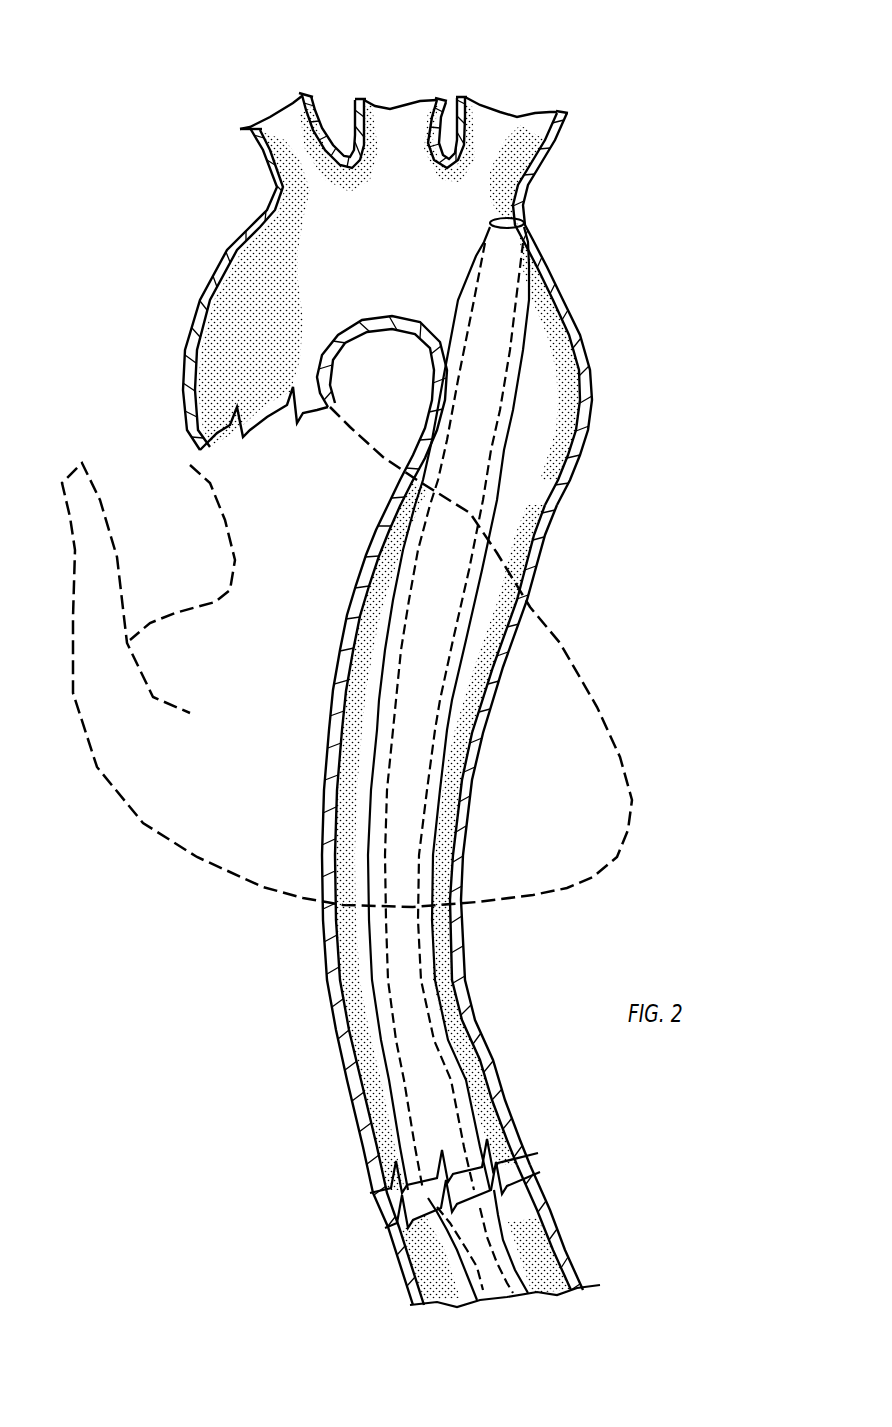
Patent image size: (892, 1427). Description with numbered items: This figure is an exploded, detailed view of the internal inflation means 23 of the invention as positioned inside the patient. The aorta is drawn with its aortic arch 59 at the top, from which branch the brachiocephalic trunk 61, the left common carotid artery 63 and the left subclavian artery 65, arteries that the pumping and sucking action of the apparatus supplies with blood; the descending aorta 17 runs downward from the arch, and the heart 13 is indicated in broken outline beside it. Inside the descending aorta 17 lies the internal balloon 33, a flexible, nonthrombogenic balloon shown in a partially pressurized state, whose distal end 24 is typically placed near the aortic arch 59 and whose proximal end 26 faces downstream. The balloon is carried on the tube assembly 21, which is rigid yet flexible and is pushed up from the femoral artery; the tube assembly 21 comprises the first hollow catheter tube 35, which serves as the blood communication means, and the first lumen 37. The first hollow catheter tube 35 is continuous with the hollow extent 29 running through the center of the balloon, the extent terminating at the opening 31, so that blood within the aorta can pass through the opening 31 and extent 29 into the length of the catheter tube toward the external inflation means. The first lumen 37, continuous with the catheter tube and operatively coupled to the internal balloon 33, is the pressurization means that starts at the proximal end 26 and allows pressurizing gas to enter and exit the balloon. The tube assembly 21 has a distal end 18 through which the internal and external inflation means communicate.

The heart 13 is at (197, 853).
The descending aorta 17 is at (477, 765).
The distal end 18 is at (500, 1243).
The tube assembly 21 is at (548, 1272).
The internal inflation means 23 is at (540, 323).
The distal end 24 is at (475, 237).
The proximal end 26 is at (498, 1208).
The hollow extent 29 is at (470, 557).
The opening 31 is at (523, 204).
The internal balloon 33 is at (507, 413).
The first hollow catheter tube 35 is at (478, 1247).
The first lumen 37 is at (450, 1247).
The aortic arch 59 is at (223, 207).
The brachiocephalic trunk 61 is at (250, 143).
The left common carotid artery 63 is at (352, 117).
The left subclavian artery 65 is at (560, 128).